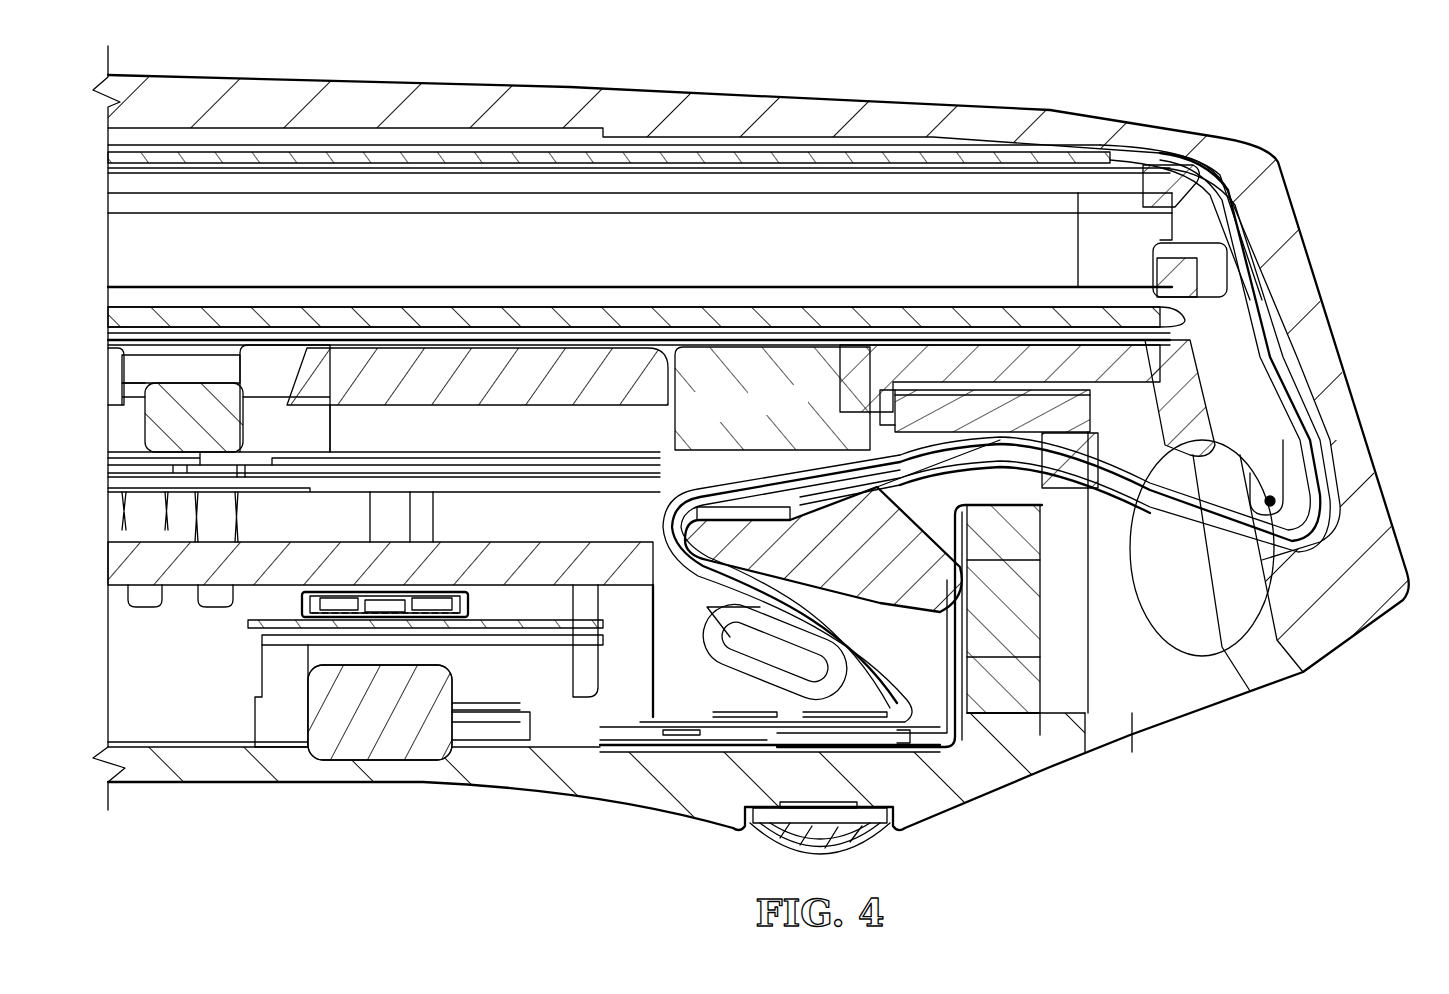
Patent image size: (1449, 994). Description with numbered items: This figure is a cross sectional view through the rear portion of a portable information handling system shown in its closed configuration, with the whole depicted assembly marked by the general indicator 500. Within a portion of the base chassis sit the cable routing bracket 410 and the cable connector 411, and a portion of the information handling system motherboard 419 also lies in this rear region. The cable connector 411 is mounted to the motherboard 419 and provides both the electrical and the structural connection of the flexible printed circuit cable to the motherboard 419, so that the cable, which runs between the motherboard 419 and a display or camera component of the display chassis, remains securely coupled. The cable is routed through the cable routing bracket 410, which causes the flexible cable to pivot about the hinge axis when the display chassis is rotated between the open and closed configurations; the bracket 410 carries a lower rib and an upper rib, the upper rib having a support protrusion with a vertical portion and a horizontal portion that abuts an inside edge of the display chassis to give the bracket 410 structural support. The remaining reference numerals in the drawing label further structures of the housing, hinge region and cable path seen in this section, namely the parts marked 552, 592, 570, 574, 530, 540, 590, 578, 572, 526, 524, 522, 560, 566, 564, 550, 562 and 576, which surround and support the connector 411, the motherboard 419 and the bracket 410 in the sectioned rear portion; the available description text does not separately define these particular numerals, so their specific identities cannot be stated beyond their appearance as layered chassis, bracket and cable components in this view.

The electronic device 500 is at (1107, 80).
The chassis 552 is at (875, 470).
The support block 592 is at (955, 400).
The flexible circuit 570 is at (673, 530).
The bracket body 574 is at (837, 488).
The display support 530 is at (597, 530).
The cable connector 411 is at (347, 592).
The information handling system motherboard 419 is at (187, 568).
The gasket 540 is at (1278, 501).
The flex cable 590 is at (1053, 490).
The spacer 578 is at (1040, 575).
The bracket 572 is at (1040, 648).
The housing wall 526 is at (1253, 655).
The battery 524 is at (483, 755).
The support member 522 is at (505, 760).
The frame 560 is at (548, 648).
The cable routing bracket 410 is at (713, 650).
The switch 566 is at (720, 723).
The dome 564 is at (757, 690).
The button 550 is at (910, 750).
The bracket 562 is at (937, 753).
The support 576 is at (1045, 715).